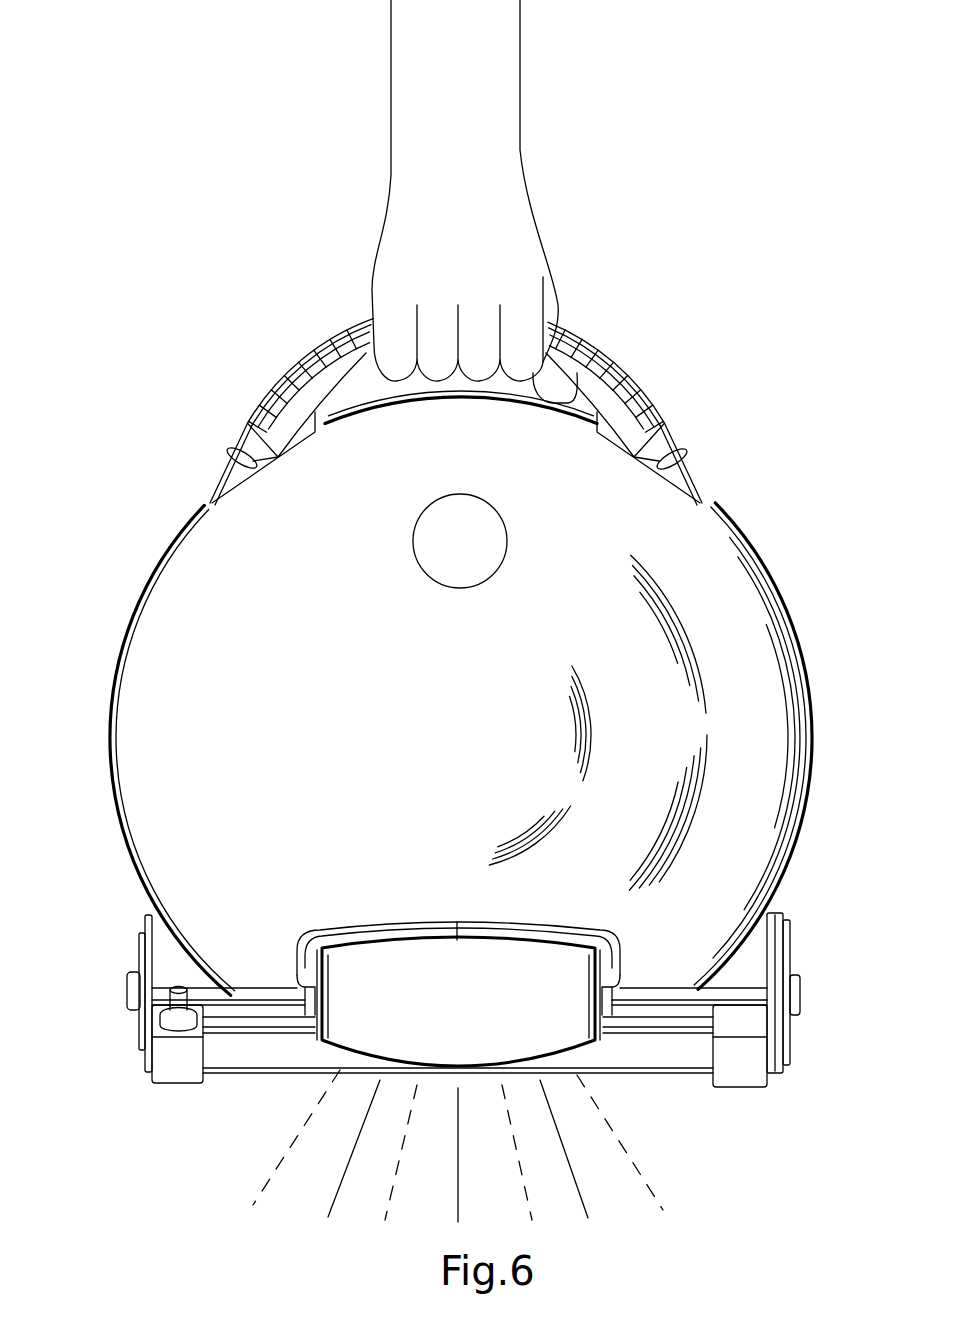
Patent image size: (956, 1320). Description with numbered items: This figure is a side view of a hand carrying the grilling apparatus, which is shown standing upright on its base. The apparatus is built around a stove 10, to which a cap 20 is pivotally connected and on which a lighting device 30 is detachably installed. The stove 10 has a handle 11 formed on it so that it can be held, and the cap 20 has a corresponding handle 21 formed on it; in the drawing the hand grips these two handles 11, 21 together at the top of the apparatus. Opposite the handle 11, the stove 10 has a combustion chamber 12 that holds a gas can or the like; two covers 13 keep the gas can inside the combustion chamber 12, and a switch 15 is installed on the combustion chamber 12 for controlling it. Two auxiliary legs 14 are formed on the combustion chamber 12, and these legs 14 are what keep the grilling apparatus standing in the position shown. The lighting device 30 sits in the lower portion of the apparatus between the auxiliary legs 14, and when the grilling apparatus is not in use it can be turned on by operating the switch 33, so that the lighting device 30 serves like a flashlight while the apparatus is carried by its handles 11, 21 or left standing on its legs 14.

The stove 10 is at (103, 868).
The handle 11 is at (456, 381).
The combustion chamber 12 is at (238, 1055).
The cover 13 is at (128, 997).
The auxiliary leg 14 is at (185, 1060).
The switch 15 is at (170, 1007).
The cap 20 is at (173, 578).
The handle 21 is at (325, 362).
The lighting device 30 is at (326, 1062).
The switch 33 is at (460, 1066).